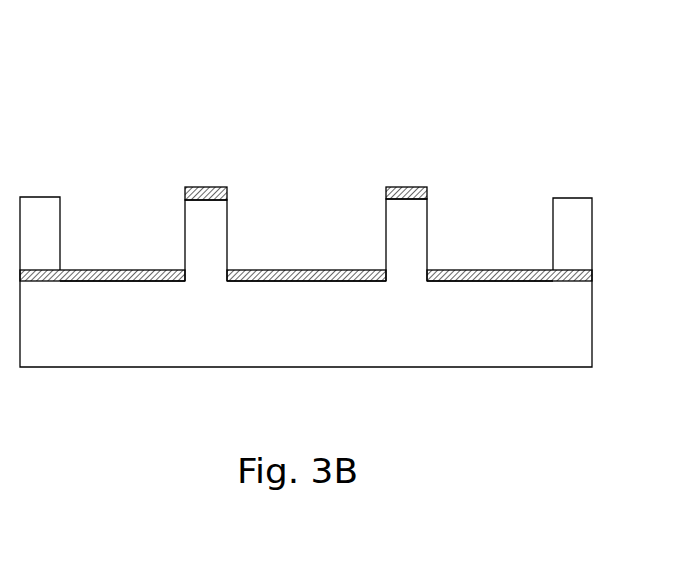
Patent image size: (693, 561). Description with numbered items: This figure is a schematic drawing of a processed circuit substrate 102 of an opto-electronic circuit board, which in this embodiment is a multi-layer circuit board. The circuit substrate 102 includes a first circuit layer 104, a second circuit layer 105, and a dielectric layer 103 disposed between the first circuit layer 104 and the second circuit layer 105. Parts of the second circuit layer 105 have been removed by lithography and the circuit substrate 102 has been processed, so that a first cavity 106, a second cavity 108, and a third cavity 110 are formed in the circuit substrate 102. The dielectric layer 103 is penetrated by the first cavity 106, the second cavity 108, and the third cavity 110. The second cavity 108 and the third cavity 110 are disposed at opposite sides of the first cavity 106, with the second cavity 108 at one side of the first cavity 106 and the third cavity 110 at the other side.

The circuit substrate 102 is at (50, 56).
The dielectric layer 103 is at (585, 232).
The first circuit layer 104 is at (590, 276).
The second circuit layer 105 is at (406, 187).
The first cavity 106 is at (325, 187).
The second cavity 108 is at (124, 187).
The third cavity 110 is at (491, 187).